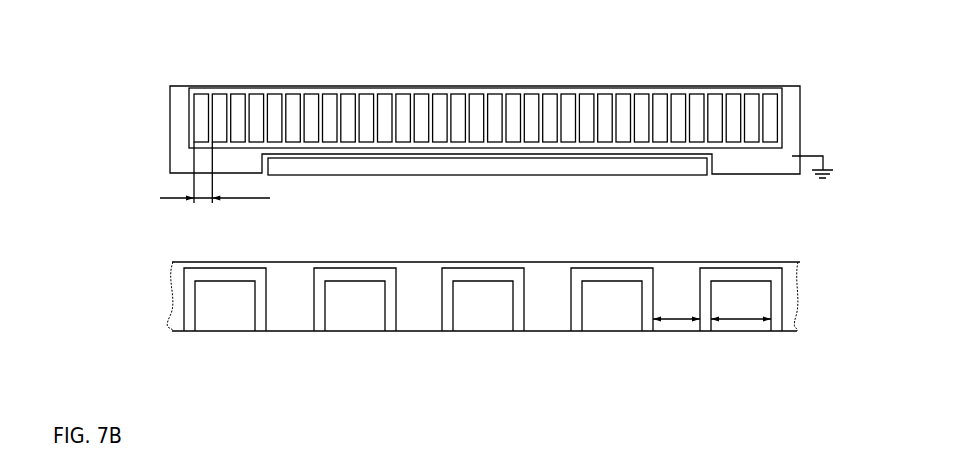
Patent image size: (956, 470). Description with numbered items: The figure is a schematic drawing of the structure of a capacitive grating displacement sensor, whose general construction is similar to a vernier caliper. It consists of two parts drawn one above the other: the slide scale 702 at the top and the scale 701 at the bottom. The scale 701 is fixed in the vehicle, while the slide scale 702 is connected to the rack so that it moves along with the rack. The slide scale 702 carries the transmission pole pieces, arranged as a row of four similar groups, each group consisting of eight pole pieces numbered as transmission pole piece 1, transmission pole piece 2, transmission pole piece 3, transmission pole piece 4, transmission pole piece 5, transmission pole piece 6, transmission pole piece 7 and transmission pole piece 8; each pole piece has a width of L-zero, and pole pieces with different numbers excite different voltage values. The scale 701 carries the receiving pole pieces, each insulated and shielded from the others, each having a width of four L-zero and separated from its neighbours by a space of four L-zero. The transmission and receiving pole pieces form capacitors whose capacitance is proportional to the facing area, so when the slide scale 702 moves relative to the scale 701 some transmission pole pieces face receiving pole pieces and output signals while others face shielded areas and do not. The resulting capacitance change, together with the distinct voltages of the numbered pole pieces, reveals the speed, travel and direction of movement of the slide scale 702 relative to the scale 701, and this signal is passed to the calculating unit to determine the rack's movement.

The scale 701 is at (172, 331).
The slide scale 702 is at (180, 95).
The transmission pole piece 1 is at (421, 118).
The transmission pole piece 2 is at (439, 118).
The transmission pole piece 3 is at (458, 118).
The transmission pole piece 4 is at (476, 118).
The transmission pole piece 5 is at (494, 118).
The transmission pole piece 6 is at (513, 118).
The transmission pole piece 7 is at (531, 118).
The transmission pole piece 8 is at (550, 121).